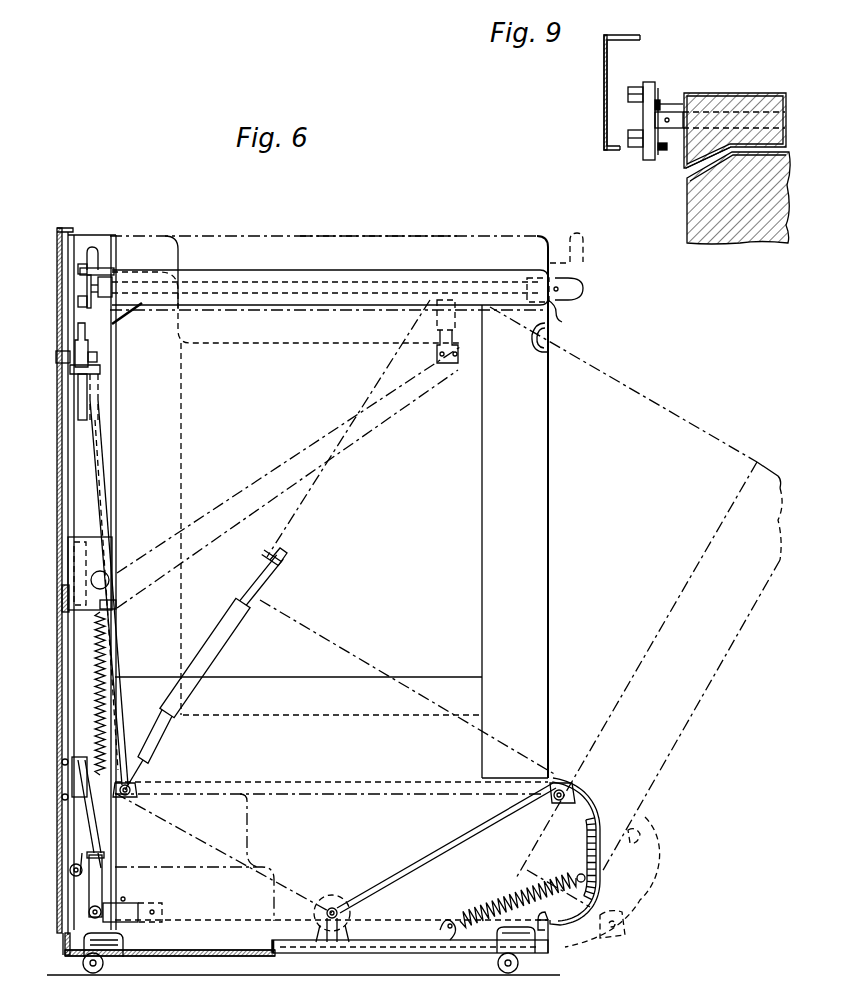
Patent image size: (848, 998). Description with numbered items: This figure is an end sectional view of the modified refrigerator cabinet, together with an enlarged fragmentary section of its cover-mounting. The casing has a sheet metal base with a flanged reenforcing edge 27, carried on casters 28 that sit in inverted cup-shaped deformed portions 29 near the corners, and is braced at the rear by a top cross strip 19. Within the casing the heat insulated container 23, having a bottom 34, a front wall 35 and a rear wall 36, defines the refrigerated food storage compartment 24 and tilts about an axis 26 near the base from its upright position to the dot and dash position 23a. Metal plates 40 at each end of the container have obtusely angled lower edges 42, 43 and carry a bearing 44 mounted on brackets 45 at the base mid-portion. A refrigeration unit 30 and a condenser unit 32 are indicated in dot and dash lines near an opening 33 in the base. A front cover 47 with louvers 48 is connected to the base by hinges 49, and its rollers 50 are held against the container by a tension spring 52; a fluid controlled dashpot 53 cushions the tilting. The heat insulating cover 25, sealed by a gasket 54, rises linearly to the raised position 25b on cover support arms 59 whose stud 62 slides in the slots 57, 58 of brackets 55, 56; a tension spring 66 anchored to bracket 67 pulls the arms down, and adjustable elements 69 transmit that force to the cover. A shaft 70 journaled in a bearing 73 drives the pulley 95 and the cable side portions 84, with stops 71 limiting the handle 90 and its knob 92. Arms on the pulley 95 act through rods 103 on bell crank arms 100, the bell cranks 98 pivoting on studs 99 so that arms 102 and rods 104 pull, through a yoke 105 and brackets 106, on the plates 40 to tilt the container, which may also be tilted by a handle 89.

In FIG. 6, the top cross strip 19 is at (58, 232).
In FIG. 9, the top cross strip 19 is at (603, 72).
In FIG. 6, the heat insulated container 23 is at (548, 534).
In FIG. 9, the heat insulated container 23 is at (688, 226).
In FIG. 6, the tilted position of heat insulated container 23a is at (702, 704).
In FIG. 6, the refrigerated food storage compartment 24 is at (183, 447).
In FIG. 6, the heat insulating cover 25 is at (470, 270).
In FIG. 9, the heat insulating cover 25 is at (748, 93).
In FIG. 6, the raised position of cover 25b is at (386, 237).
In FIG. 6, the axis 26 is at (336, 908).
In FIG. 6, the flanged reenforcing edge 27 is at (62, 947).
In FIG. 6, the casters 28 is at (93, 966).
In FIG. 6, the inverted cup-shaped deformed portions 29 is at (128, 957).
In FIG. 6, the refrigeration unit 30 is at (253, 832).
In FIG. 6, the condenser unit 32 is at (380, 930).
In FIG. 6, the opening 33 is at (404, 953).
In FIG. 6, the bottom 34 is at (295, 714).
In FIG. 6, the front wall 35 is at (550, 452).
In FIG. 6, the rear wall 36 is at (184, 482).
In FIG. 6, the metal plates 40 is at (447, 862).
In FIG. 6, the lower edge 42 is at (196, 956).
In FIG. 6, the lower edge 43 is at (412, 878).
In FIG. 6, the bearing 44 is at (322, 895).
In FIG. 6, the brackets 45 is at (330, 945).
In FIG. 6, the cover 47 is at (592, 802).
In FIG. 6, the louvers 48 is at (598, 832).
In FIG. 6, the hinges 49 is at (555, 947).
In FIG. 6, the rollers 50 is at (563, 788).
In FIG. 6, the tension spring 52 is at (512, 886).
In FIG. 6, the fluid controlled dashpot 53 is at (88, 745).
In FIG. 6, the gasket 54 is at (552, 342).
In FIG. 9, the gasket 54 is at (694, 166).
In FIG. 6, the bracket 55 is at (72, 245).
In FIG. 6, the bracket 56 is at (82, 550).
In FIG. 6, the slot 57 is at (95, 250).
In FIG. 6, the slot 58 is at (96, 568).
In FIG. 6, the cover support arms 59 is at (372, 430).
In FIG. 6, the stud 62 is at (116, 604).
In FIG. 6, the tension spring 66 is at (95, 650).
In FIG. 6, the bracket 67 is at (85, 780).
In FIG. 6, the adjustable elements 69 is at (435, 322).
In FIG. 6, the shaft 70 is at (270, 290).
In FIG. 9, the shaft 70 is at (733, 108).
In FIG. 6, the stops 71 is at (568, 283).
In FIG. 9, the bearing 73 is at (682, 110).
In FIG. 9, the side portions of cable 84 is at (657, 98).
In FIG. 6, the handle 89 is at (550, 346).
In FIG. 6, the handle 90 is at (566, 318).
In FIG. 6, the knob 92 is at (580, 292).
In FIG. 6, the pulley 95 is at (90, 270).
In FIG. 9, the pulley 95 is at (662, 104).
In FIG. 6, the bell cranks 98 is at (88, 368).
In FIG. 6, the studs 99 is at (97, 356).
In FIG. 6, the bell crank arm 100 is at (85, 333).
In FIG. 6, the bell crank arm 102 is at (87, 395).
In FIG. 9, the rods 103 is at (640, 88).
In FIG. 6, the rods 104 is at (93, 818).
In FIG. 6, the yoke 105 is at (94, 890).
In FIG. 6, the brackets 106 is at (150, 900).